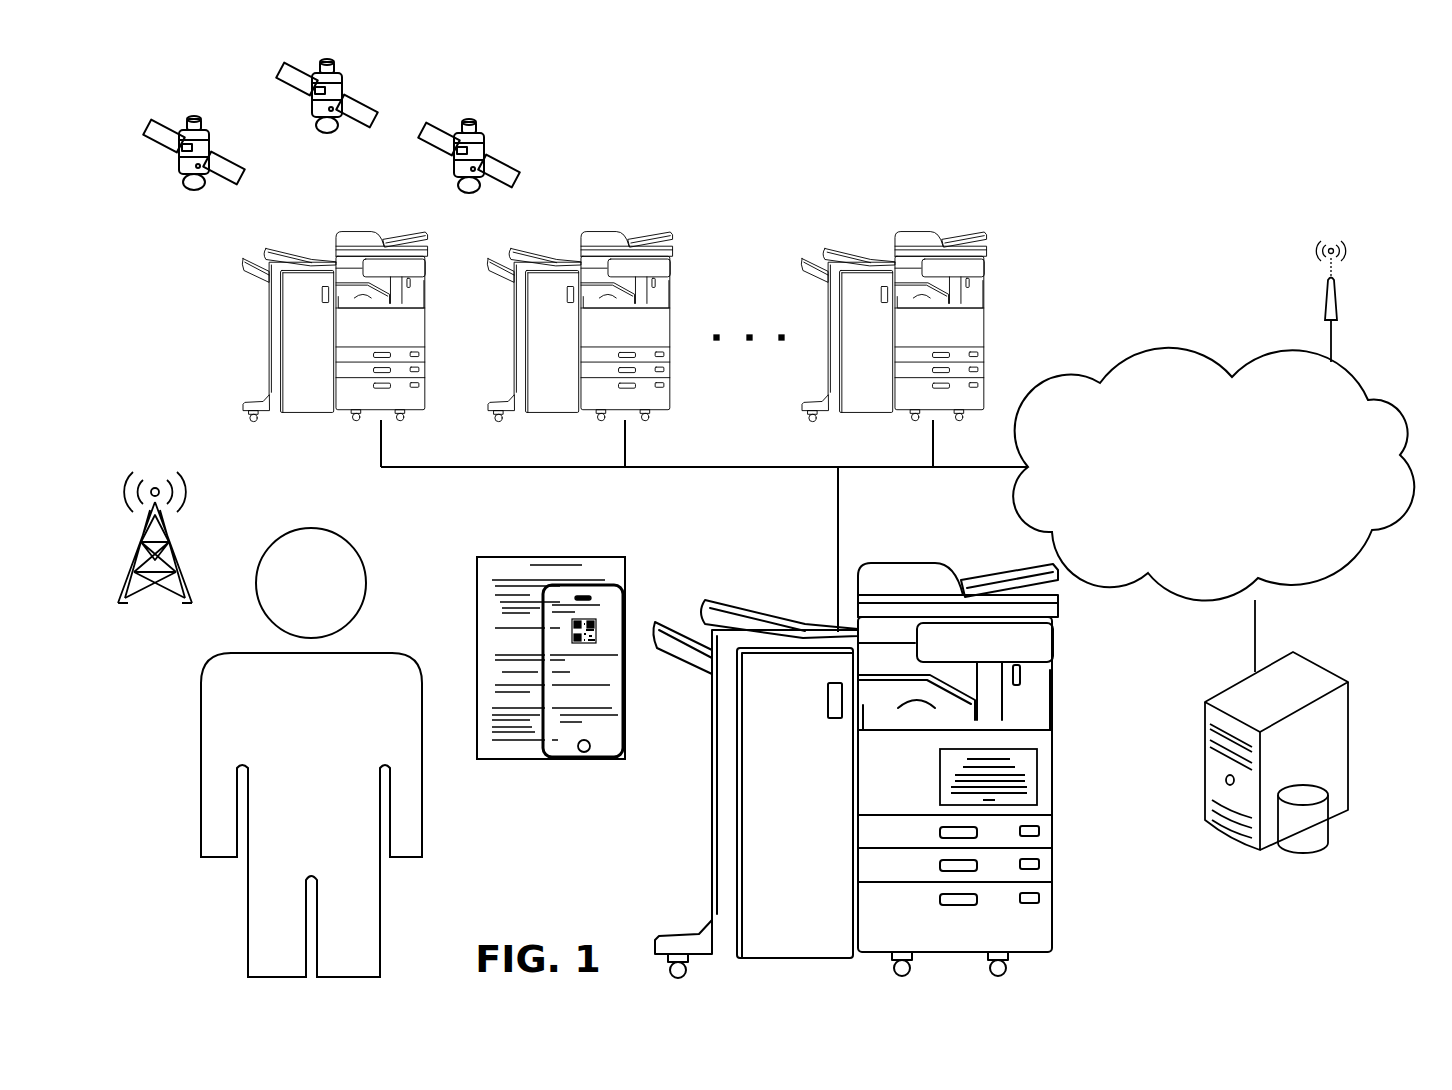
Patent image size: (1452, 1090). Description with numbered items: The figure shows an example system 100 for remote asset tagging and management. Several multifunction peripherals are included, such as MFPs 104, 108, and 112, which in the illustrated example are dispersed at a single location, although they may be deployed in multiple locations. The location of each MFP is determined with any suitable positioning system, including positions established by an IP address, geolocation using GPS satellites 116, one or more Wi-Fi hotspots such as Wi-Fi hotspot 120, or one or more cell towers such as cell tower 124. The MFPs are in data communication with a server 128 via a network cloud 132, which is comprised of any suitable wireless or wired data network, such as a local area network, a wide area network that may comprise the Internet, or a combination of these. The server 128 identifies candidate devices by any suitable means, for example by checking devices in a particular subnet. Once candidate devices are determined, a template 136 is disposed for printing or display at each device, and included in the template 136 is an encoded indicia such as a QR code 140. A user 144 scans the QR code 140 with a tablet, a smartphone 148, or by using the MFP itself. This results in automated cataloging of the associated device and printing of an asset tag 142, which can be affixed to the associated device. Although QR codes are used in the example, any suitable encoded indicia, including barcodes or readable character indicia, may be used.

The system 100 is at (1153, 205).
The MFP 104 is at (902, 770).
The MFP 108 is at (266, 320).
The MFP 112 is at (672, 318).
The GPS satellites 116 is at (513, 137).
The Wi-Fi hotspot 120 is at (1320, 292).
The cell tower 124 is at (180, 558).
The server 128 is at (1348, 706).
The network cloud 132 is at (1385, 398).
The template 136 is at (518, 568).
The QR code 140 is at (600, 628).
The asset tag 142 is at (1040, 788).
The user 144 is at (423, 810).
The smartphone 148 is at (630, 697).